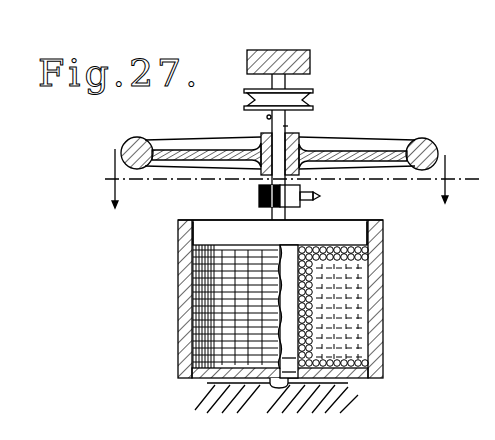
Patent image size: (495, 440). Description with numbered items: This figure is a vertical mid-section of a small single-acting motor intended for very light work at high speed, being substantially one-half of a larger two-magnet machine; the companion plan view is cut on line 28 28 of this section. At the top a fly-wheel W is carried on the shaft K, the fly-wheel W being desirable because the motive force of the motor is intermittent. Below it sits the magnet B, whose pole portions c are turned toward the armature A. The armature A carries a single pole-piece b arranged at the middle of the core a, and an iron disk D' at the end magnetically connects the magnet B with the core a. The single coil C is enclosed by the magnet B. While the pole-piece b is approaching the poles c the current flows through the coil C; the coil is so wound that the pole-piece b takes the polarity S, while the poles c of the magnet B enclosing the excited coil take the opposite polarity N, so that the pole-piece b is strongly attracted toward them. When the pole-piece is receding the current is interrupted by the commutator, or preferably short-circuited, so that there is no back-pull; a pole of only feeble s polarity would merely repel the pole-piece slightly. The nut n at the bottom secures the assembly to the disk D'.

The fly-wheel W is at (279, 148).
The screw shaft / spindle K is at (277, 147).
The section line 28 is at (112, 180).
The S polarity S is at (177, 233).
The N polarity N is at (280, 233).
The pole-piece b is at (280, 232).
The pole portions c is at (280, 213).
The armature A is at (289, 311).
The coil C is at (235, 306).
The magnet B is at (349, 307).
The core a is at (289, 352).
The s polarity s is at (289, 366).
The nut n is at (281, 388).
The iron disk D' is at (280, 390).